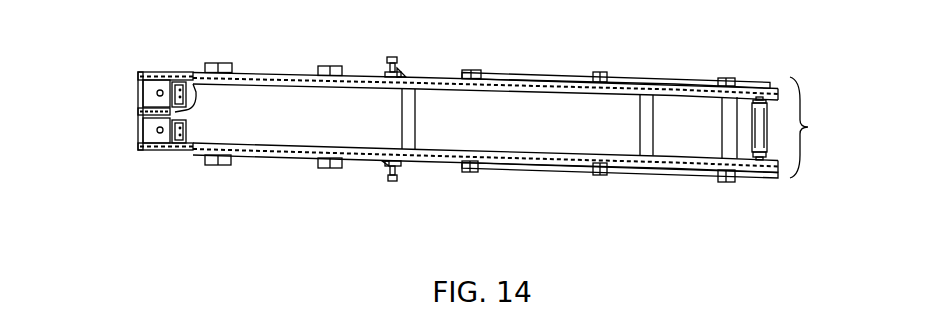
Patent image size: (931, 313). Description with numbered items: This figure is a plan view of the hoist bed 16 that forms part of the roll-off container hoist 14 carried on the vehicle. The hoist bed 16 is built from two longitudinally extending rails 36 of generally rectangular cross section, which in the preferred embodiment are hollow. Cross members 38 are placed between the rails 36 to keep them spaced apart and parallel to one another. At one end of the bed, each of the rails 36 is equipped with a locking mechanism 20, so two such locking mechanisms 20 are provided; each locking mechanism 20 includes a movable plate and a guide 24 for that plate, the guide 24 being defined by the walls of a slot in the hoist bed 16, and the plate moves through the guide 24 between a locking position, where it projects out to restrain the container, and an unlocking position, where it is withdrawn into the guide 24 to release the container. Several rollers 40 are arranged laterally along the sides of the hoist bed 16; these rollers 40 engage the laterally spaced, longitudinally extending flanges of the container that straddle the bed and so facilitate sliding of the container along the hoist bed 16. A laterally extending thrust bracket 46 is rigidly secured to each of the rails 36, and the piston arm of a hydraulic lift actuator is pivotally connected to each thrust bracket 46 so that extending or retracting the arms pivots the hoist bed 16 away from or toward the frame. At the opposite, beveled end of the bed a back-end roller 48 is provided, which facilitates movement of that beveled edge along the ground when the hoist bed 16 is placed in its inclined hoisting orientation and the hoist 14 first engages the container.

The roll-off container hoist 14 is at (820, 127).
The hoist bed 16 is at (288, 122).
The locking mechanism 20 is at (180, 66).
The guide 24 is at (187, 72).
The rails 36 is at (303, 150).
The cross members 38 is at (417, 127).
The rollers 40 is at (138, 113).
The thrust bracket 46 is at (400, 60).
The back-end roller 48 is at (765, 160).